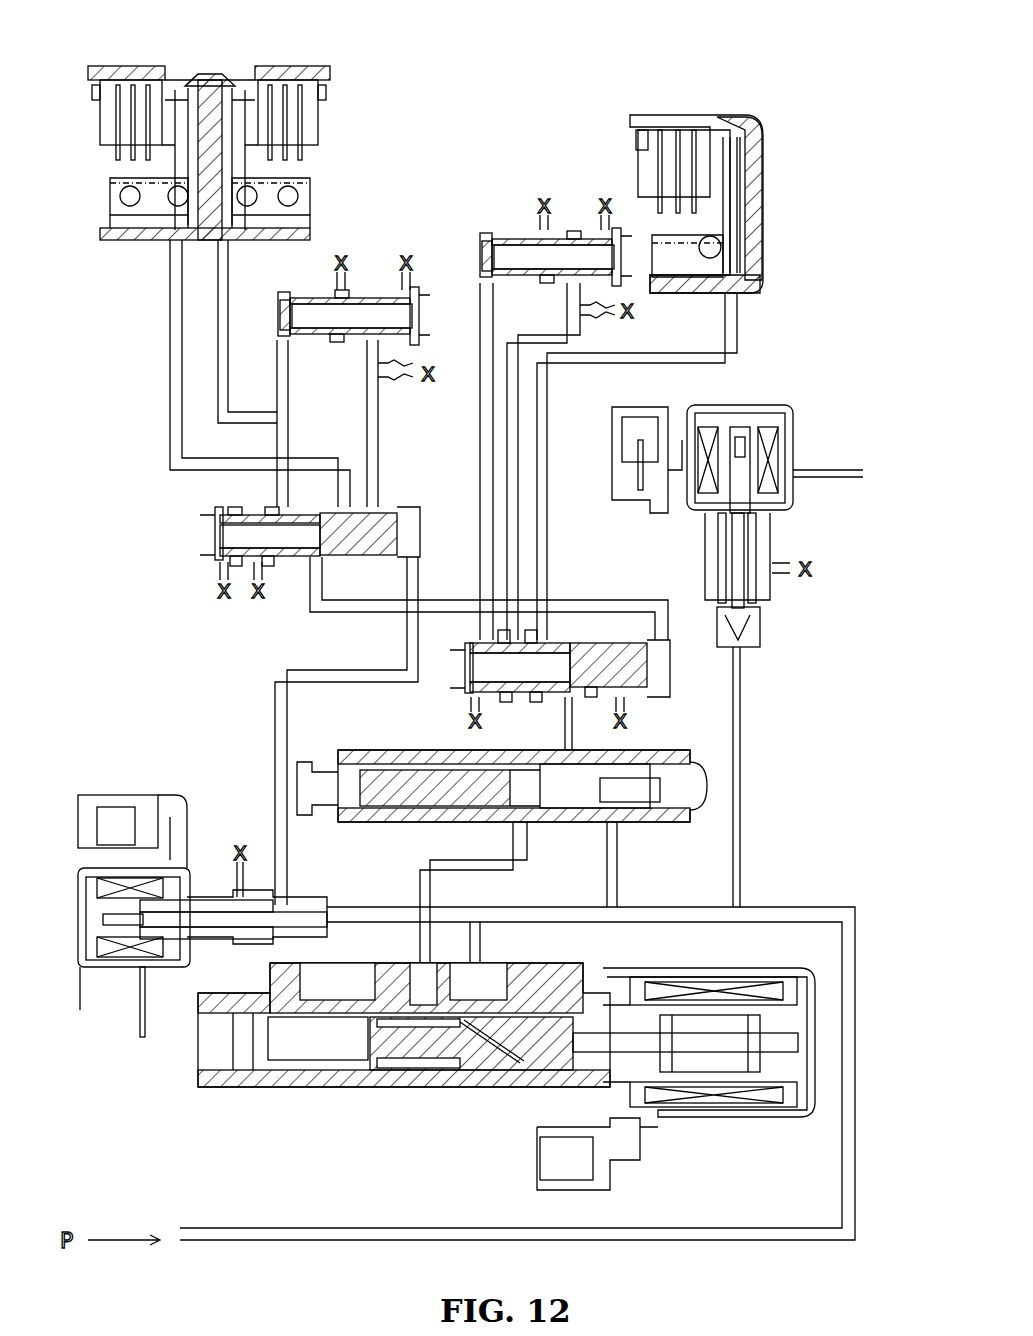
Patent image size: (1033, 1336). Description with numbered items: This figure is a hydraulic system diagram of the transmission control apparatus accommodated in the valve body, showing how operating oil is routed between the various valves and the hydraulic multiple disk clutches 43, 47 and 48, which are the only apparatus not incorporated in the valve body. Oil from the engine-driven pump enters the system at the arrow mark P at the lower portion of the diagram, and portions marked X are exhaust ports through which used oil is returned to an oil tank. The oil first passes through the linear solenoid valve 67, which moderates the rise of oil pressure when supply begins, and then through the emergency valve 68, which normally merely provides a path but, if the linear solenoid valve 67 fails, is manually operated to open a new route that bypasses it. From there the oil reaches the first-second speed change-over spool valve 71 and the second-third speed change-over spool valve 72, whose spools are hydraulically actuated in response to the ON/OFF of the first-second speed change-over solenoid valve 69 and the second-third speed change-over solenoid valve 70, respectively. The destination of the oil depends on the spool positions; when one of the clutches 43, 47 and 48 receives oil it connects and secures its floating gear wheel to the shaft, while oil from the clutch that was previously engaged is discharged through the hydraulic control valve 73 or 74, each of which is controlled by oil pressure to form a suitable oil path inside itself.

The hydraulic multiple disk clutch 43 is at (695, 115).
The hydraulic multiple disk clutch 47 is at (148, 66).
The hydraulic multiple disk clutch 48 is at (303, 66).
The linear solenoid valve 67 is at (408, 1088).
The emergency valve 68 is at (710, 767).
The first-second speed change-over solenoid valve 69 is at (768, 405).
The second-third speed change-over solenoid valve 70 is at (80, 975).
The first-second speed change-over spool valve 71 is at (666, 688).
The second-third speed change-over spool valve 72 is at (215, 548).
The hydraulic control valve 73 is at (527, 237).
The hydraulic control valve 74 is at (375, 286).